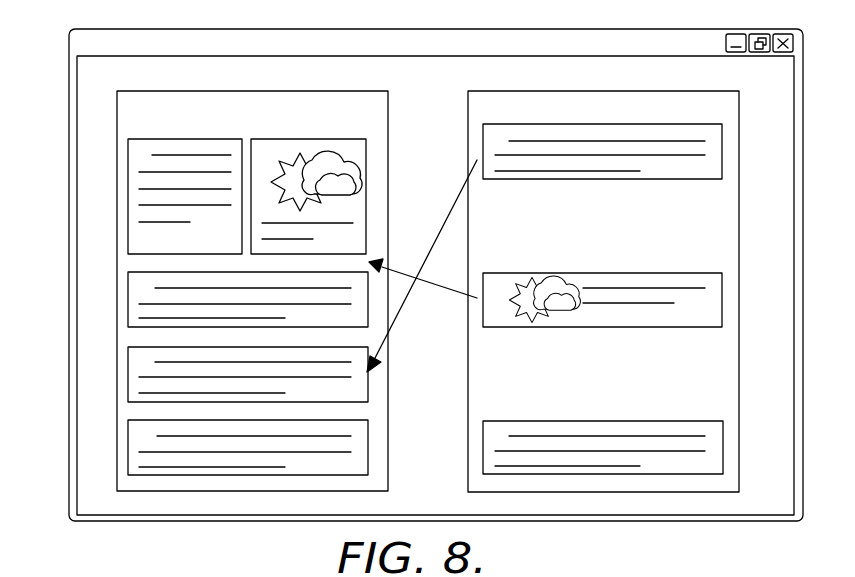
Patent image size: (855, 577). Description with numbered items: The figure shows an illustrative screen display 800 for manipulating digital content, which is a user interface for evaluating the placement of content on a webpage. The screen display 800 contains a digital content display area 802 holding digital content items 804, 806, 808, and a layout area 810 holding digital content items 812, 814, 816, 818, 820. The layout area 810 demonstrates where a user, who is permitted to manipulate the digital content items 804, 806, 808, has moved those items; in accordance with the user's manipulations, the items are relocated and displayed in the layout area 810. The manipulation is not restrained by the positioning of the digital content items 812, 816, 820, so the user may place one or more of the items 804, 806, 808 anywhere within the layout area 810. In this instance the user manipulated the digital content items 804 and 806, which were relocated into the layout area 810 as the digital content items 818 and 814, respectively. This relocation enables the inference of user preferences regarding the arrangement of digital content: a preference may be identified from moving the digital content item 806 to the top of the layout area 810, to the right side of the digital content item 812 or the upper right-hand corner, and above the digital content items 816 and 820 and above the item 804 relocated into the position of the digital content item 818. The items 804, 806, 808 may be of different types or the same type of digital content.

The screen display 800 is at (197, 28).
The digital content display area 802 is at (740, 108).
The digital content item 804 is at (723, 149).
The digital content item 806 is at (723, 301).
The digital content item 808 is at (724, 449).
The layout area 810 is at (117, 116).
The digital content item 812 is at (184, 139).
The digital content item 814 is at (304, 139).
The digital content item 816 is at (128, 300).
The digital content item 818 is at (128, 375).
The digital content item 820 is at (128, 448).